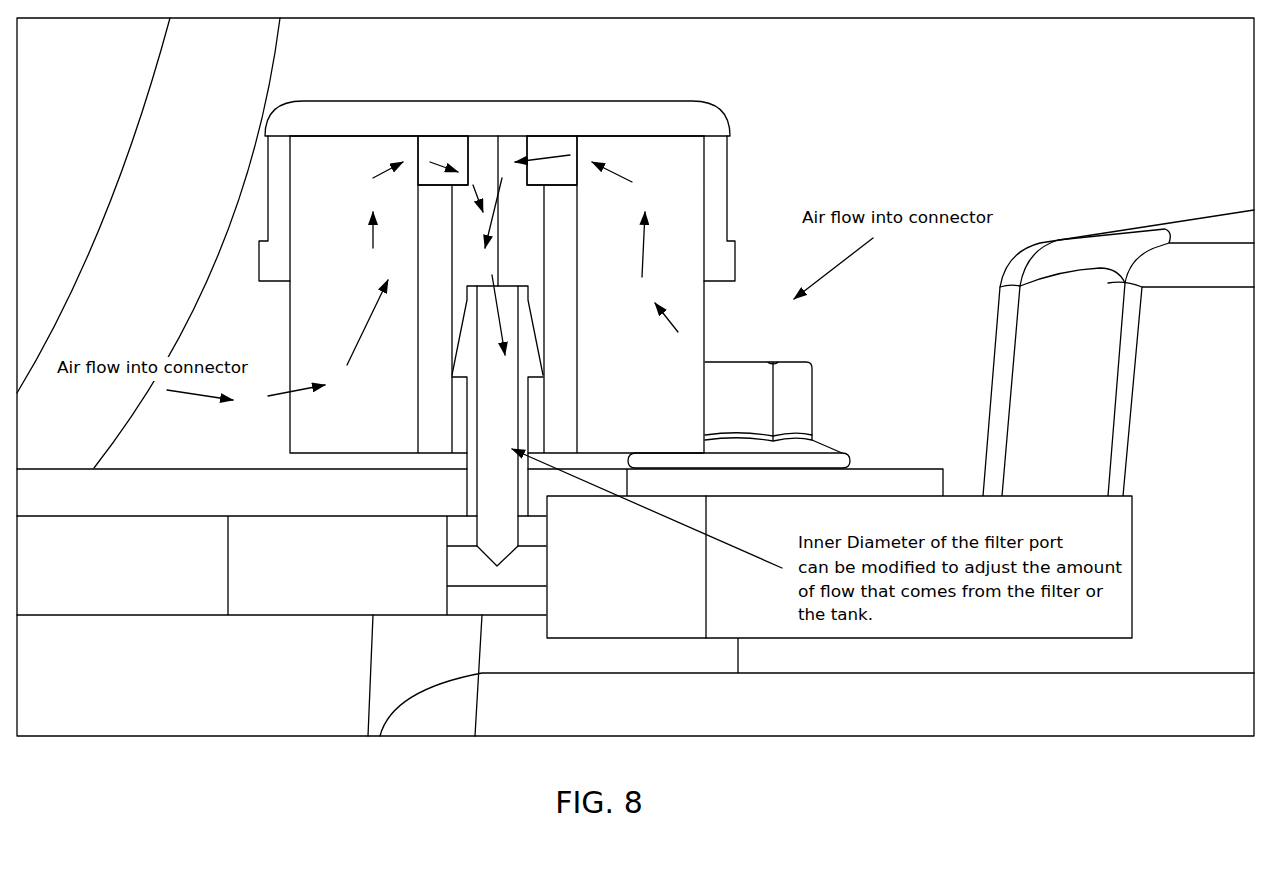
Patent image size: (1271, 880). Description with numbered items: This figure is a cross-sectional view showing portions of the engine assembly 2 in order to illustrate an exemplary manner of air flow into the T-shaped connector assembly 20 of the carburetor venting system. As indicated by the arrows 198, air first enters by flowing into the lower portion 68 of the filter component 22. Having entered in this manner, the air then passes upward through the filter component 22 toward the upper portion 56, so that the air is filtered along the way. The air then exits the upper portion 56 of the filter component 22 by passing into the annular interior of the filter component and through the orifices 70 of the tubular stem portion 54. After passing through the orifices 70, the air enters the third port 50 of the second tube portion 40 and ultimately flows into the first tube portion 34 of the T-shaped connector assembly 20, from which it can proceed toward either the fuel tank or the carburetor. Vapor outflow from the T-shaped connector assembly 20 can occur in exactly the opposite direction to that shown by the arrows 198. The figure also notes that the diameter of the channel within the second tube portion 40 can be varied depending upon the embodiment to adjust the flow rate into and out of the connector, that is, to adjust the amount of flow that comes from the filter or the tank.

The engine assembly 2 is at (1040, 179).
The T-shaped connector assembly 20 is at (739, 100).
The filter component 22 is at (368, 437).
The first tube portion 34 is at (706, 606).
The second tube portion 40 is at (524, 418).
The third port 50 is at (511, 285).
The tubular stem portion 54 is at (433, 444).
The upper portion 56 is at (355, 140).
The lower portion 68 is at (298, 437).
The orifices 70 is at (448, 140).
The arrows 198 is at (834, 271).